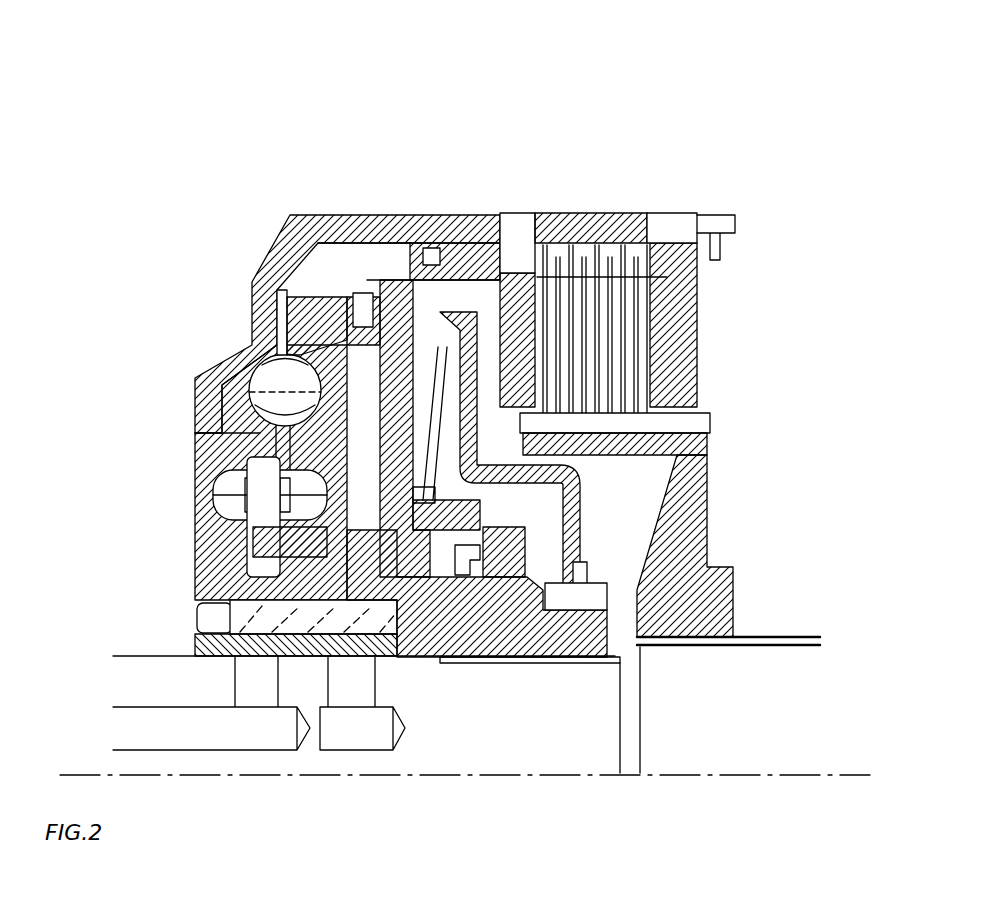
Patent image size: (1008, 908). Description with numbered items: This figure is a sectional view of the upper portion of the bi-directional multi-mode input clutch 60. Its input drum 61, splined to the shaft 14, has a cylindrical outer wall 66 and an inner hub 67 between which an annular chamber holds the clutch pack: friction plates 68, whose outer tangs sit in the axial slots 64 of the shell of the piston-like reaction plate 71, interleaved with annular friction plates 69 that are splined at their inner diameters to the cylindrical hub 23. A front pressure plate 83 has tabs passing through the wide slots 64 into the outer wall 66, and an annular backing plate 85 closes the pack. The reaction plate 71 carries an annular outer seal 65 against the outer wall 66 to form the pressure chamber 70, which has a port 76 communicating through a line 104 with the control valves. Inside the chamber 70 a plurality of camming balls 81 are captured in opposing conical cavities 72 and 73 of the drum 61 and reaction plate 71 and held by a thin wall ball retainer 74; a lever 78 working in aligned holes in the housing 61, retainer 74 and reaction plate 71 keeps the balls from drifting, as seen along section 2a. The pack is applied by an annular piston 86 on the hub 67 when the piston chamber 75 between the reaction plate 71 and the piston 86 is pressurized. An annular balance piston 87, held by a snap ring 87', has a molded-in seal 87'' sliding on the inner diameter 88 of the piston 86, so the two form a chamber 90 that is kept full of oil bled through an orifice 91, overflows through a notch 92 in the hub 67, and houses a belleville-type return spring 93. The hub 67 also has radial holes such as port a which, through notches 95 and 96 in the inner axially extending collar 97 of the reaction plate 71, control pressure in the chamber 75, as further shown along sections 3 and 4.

The bi-directional multi-mode input clutch 60 is at (360, 212).
The input drum 61 is at (295, 270).
The cylindrical outer wall 66 is at (345, 215).
The pressure chamber 70 is at (262, 262).
The piston-like reaction plate 71 is at (302, 310).
The piston chamber 75 is at (298, 262).
The orifice 91 is at (280, 320).
The conical cavity 72 is at (268, 360).
The conical cavity 73 is at (245, 405).
The ball retainer 74 is at (240, 433).
The camming ball 81 is at (252, 392).
The lever 78 is at (195, 548).
The port 76 is at (275, 660).
The line 104 is at (345, 728).
The notch 96 is at (265, 622).
The molded-in seal 87'' is at (400, 171).
The annular piston 86 is at (455, 285).
The axial slots 64 is at (583, 255).
The annular outer seal 65 is at (440, 345).
The chamber 90 is at (537, 512).
The annular balance piston 87 is at (738, 547).
The snap ring 87' is at (609, 571).
The notch 95 is at (380, 610).
The inner axially extending collar 97 is at (340, 560).
The port a is at (352, 600).
The shaft 14 is at (585, 728).
The front pressure plate 83 is at (548, 230).
The friction plates 68 is at (625, 240).
The annular friction plates 69 is at (660, 228).
The inner diameter 88 is at (683, 373).
The annular backing plate 85 is at (702, 367).
The belleville-type return spring 93 is at (545, 465).
The cylindrical hub 23 is at (722, 590).
The notch 92 is at (660, 645).
The inner hub 67 is at (572, 630).
The section line 3 is at (340, 95).
The section line 4 is at (135, 414).
The section line 2a is at (135, 532).